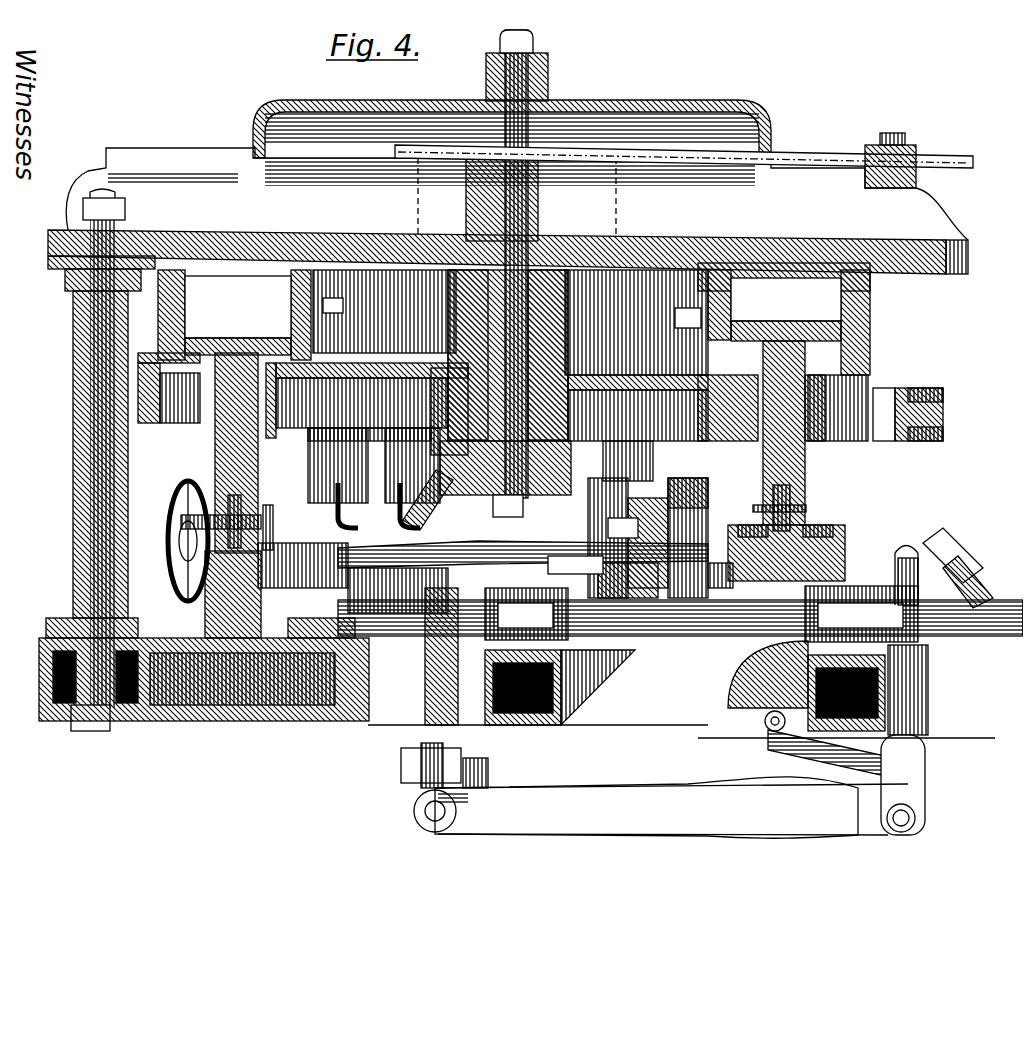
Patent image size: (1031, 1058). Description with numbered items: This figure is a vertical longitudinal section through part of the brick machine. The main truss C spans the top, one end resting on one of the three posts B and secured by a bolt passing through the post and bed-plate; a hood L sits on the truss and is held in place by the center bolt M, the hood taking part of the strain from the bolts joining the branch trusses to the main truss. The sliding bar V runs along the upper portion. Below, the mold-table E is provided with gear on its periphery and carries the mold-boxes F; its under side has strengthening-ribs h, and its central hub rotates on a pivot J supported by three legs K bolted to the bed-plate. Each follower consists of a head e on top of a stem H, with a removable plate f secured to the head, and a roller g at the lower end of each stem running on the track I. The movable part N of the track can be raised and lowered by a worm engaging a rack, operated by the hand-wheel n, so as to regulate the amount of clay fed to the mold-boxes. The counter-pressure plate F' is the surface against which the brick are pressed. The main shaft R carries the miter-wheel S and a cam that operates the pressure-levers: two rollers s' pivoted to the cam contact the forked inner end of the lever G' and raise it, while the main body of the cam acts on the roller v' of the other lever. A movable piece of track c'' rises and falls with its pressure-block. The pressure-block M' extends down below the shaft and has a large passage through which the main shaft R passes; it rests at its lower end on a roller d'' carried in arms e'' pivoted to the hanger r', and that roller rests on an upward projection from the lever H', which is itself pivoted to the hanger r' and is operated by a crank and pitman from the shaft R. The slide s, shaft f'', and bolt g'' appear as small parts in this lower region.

The main truss C is at (508, 243).
The hood L is at (540, 70).
The center bolt M is at (484, 273).
The sliding bar V is at (684, 159).
The posts B is at (65, 430).
The mold-boxes F is at (223, 315).
The counter-pressure plate F' is at (804, 322).
The follower head e is at (513, 323).
The removable plate f is at (541, 334).
The mold-table E is at (148, 410).
The follower stems H is at (505, 533).
The strengthening-ribs h is at (703, 450).
The pivot J is at (525, 355).
The legs K is at (428, 500).
The pressure-lever G' is at (648, 524).
The movable track part N is at (162, 540).
The hand-wheel n is at (173, 512).
The rollers g is at (517, 516).
The track I is at (740, 520).
The shaft f'' is at (523, 565).
The rollers s' is at (575, 545).
The slide s is at (717, 579).
The roller v' is at (697, 491).
The movable track piece c'' is at (787, 515).
The pressure-block M' is at (706, 618).
The main shaft R is at (680, 614).
The miter-wheel S is at (944, 568).
The roller d'' is at (756, 720).
The arms e'' is at (837, 755).
The hanger r' is at (914, 785).
The pressure-lever H' is at (681, 781).
The bolt g'' is at (432, 757).